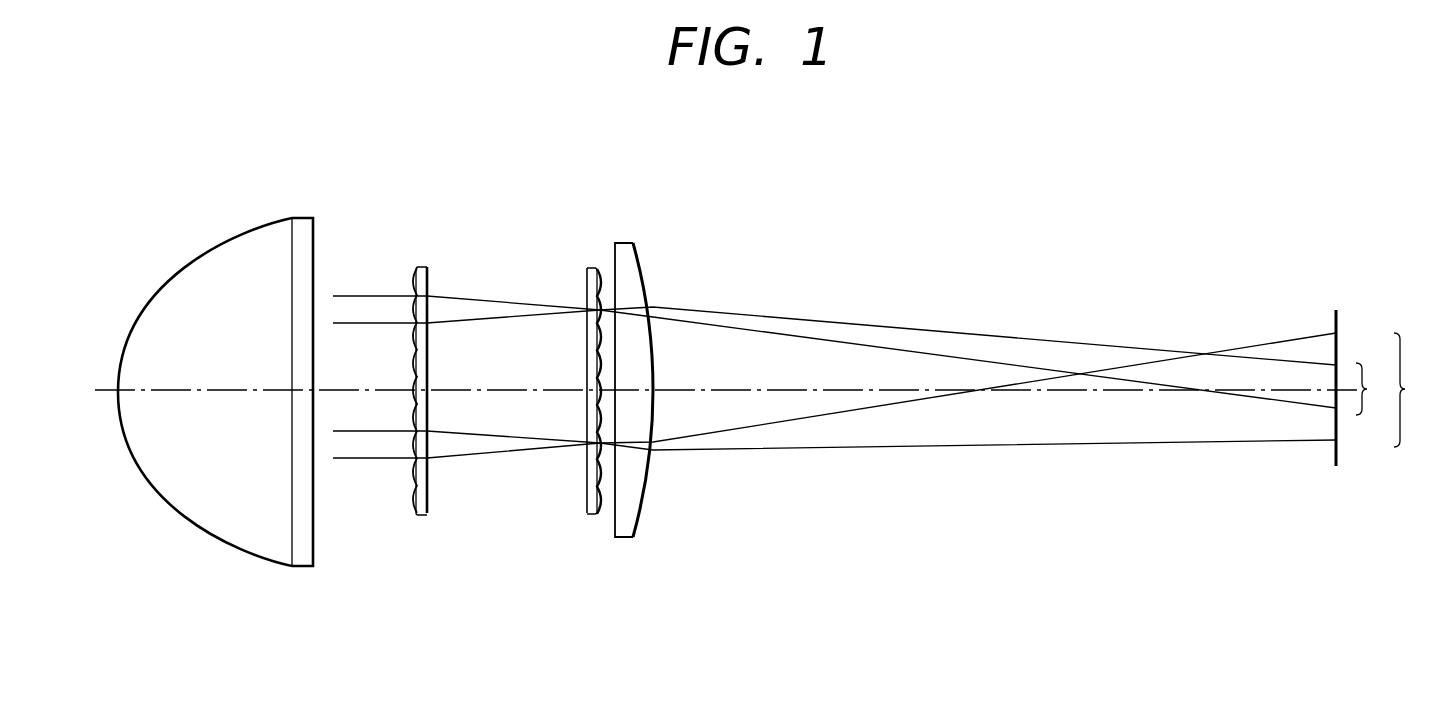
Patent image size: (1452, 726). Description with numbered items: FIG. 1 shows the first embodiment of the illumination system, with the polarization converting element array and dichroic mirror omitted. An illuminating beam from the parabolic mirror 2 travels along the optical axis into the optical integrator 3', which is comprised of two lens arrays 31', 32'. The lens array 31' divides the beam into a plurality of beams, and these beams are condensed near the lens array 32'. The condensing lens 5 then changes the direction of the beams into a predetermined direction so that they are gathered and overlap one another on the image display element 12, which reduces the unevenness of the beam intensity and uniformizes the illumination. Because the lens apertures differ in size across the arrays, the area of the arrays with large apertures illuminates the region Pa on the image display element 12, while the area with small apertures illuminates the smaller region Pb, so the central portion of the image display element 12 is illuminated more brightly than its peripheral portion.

The parabolic mirror 2 is at (252, 232).
The optical integrator 3' is at (513, 329).
The lens array 31' is at (431, 355).
The lens array 32' is at (601, 355).
The condensing lens 5 is at (627, 242).
The image display element 12 is at (1338, 327).
The illuminating area Pb is at (1377, 389).
The illuminating area Pa is at (1415, 390).